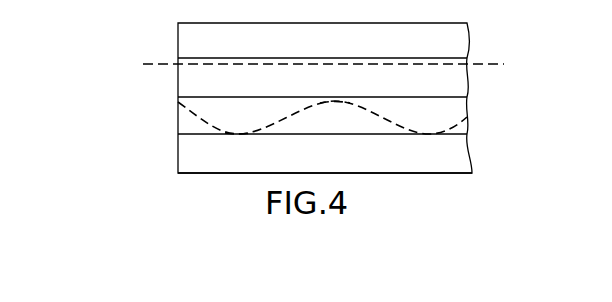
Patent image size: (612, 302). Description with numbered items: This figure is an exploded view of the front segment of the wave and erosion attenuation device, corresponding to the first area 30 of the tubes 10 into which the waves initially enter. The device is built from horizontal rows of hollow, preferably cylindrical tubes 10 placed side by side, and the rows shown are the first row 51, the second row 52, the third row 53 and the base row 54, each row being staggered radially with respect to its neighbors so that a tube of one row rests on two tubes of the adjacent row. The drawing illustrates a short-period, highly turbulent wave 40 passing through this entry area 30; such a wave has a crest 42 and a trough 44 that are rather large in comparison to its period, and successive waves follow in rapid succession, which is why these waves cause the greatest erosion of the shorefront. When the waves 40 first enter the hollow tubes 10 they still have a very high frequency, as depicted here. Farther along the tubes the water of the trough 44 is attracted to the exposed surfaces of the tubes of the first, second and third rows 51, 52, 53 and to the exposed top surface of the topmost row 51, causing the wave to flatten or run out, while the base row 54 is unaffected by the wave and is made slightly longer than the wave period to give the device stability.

The tube 10 is at (325, 98).
The area 30 is at (323, 43).
The turbulent wave 40 is at (178, 103).
The crest 42 is at (342, 103).
The trough 44 is at (242, 134).
The first row 51 is at (467, 40).
The second row 52 is at (467, 83).
The third row 53 is at (467, 112).
The base row 54 is at (470, 148).